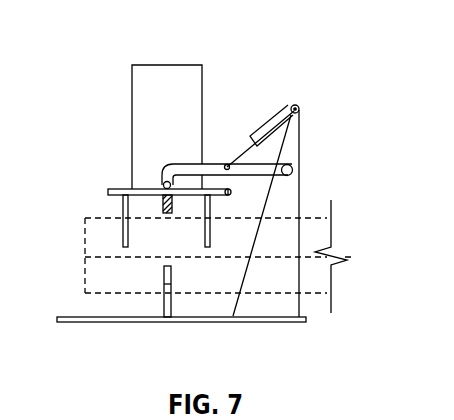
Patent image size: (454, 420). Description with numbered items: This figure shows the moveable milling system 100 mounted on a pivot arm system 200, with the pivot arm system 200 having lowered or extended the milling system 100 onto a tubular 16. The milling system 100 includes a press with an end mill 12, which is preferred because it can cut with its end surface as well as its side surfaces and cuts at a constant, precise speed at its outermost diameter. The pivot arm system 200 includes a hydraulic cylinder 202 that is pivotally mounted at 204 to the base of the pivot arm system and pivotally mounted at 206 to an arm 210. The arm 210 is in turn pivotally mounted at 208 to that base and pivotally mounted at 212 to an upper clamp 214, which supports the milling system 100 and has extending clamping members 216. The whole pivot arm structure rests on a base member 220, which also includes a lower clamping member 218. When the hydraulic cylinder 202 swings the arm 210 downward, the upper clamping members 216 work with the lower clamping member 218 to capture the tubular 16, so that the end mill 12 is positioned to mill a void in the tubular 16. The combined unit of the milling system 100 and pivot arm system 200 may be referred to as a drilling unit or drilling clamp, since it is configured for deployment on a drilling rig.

The milling system 100 is at (314, 56).
The pivot arm system 200 is at (300, 101).
The hydraulic cylinder 202 is at (270, 118).
The pivot mount 204 is at (301, 114).
The pivot mount 206 is at (227, 163).
The pivot mount 208 is at (292, 167).
The arm 210 is at (183, 163).
The pivot mount 212 is at (163, 183).
The upper clamp 214 is at (231, 192).
The upper clamping members 216 is at (205, 225).
The end mill 12 is at (126, 198).
The tubular 16 is at (98, 287).
The lower clamping member 218 is at (165, 305).
The base member 220 is at (87, 317).